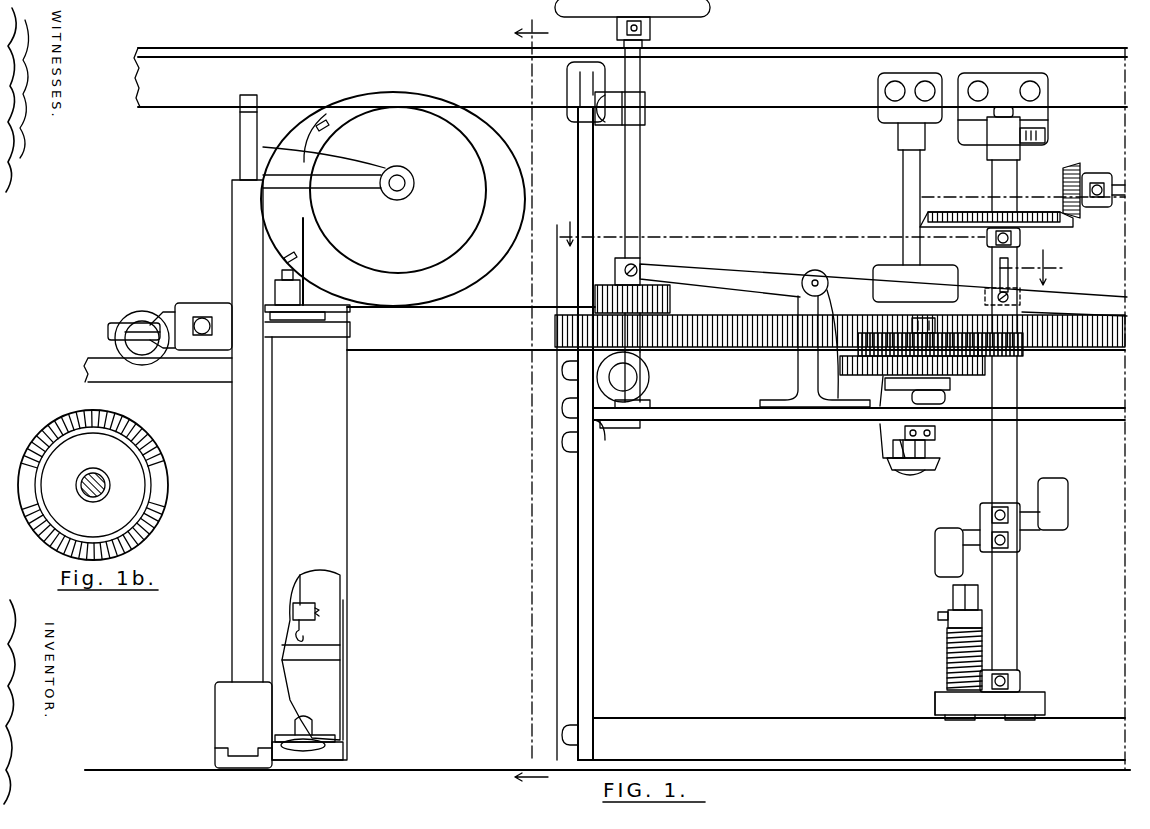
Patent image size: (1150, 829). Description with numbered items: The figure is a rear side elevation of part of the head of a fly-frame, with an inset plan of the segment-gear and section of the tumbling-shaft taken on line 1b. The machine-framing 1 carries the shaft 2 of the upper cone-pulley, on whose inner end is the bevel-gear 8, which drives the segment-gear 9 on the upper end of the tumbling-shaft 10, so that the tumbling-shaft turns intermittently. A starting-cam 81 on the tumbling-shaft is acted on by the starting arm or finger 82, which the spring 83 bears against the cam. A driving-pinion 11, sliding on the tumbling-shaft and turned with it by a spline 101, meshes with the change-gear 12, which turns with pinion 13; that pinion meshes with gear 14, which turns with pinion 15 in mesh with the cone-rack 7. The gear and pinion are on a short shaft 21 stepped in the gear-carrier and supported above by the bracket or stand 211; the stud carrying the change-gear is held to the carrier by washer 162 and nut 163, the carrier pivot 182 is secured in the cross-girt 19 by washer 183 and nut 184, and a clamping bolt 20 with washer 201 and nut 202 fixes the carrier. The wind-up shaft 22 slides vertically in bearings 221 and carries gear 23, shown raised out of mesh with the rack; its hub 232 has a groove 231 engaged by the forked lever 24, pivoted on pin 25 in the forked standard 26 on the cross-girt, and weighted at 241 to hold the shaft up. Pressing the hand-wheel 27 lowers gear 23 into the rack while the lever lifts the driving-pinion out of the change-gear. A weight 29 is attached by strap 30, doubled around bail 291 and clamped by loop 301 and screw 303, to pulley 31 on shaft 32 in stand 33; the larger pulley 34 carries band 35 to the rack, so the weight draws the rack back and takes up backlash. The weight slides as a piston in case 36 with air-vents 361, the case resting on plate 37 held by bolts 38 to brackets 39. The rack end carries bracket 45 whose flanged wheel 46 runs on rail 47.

In FIG. 1, the machine-framing 1 is at (311, 50).
In FIG. 1, the shaft of the upper cone-pulley 2 is at (1119, 179).
In FIG. 1, the cone-rack 7 is at (719, 351).
In FIG. 1, the bevel-gear 8 is at (1076, 165).
In FIG. 1, the segment-gear 9 is at (966, 205).
In FIG. 1b, the segment-gear 9 is at (93, 485).
In FIG. 1, the tumbling-shaft 10 is at (1003, 371).
In FIG. 1, the driving-pinion 11 is at (1045, 368).
In FIG. 1, the driven gear 12 is at (1009, 331).
In FIG. 1, the pinion 13 is at (944, 372).
In FIG. 1, the gear 14 is at (862, 380).
In FIG. 1, the pinion 15 is at (908, 320).
In FIG. 1, the cross-girt 19 is at (756, 427).
In FIG. 1, the bolt 20 is at (529, 404).
In FIG. 1, the short shaft 21 is at (904, 200).
In FIG. 1, the wind-up shaft 22 is at (647, 186).
In FIG. 1, the gear 23 is at (678, 299).
In FIG. 1, the lever 24 is at (883, 291).
In FIG. 1, the pin 25 is at (823, 272).
In FIG. 1, the forked standard 26 is at (791, 381).
In FIG. 1, the hand-wheel 27 is at (685, 14).
In FIG. 1, the weight 29 is at (311, 655).
In FIG. 1, the strap 30 is at (300, 272).
In FIG. 1, the pulley 31 is at (393, 199).
In FIG. 1, the shaft 32 is at (408, 191).
In FIG. 1, the stand 33 is at (331, 195).
In FIG. 1, the pulley 34 is at (406, 190).
In FIG. 1, the band 35 is at (356, 307).
In FIG. 1, the case 36 is at (282, 431).
In FIG. 1, the plate 37 is at (351, 755).
In FIG. 1, the bolts 38 is at (303, 751).
In FIG. 1, the brackets 39 is at (286, 733).
In FIG. 1, the frame or bracket 45 is at (211, 294).
In FIG. 1, the flanged wheel 46 is at (147, 305).
In FIG. 1, the rail 47 is at (179, 374).
In FIG. 1, the starting-cam 81 is at (1028, 704).
In FIG. 1, the starting arm or finger 82 is at (929, 705).
In FIG. 1, the spring 83 is at (949, 646).
In FIG. 1, the spline 101 is at (994, 281).
In FIG. 1, the washer 162 is at (950, 398).
In FIG. 1, the nut 163 is at (945, 404).
In FIG. 1, the journal or pivot 182 is at (915, 474).
In FIG. 1, the washer 183 is at (881, 449).
In FIG. 1, the nut 184 is at (888, 467).
In FIG. 1, the washer 201 is at (936, 434).
In FIG. 1, the nut 202 is at (926, 450).
In FIG. 1, the bracket or stand 211 is at (910, 111).
In FIG. 1, the bearings 221 is at (645, 102).
In FIG. 1, the groove 231 is at (624, 270).
In FIG. 1, the hub 232 is at (642, 260).
In FIG. 1, the weight 241 is at (915, 283).
In FIG. 1, the bail 291 is at (308, 638).
In FIG. 1, the rectangular open loop 301 is at (306, 611).
In FIG. 1, the screw 303 is at (331, 611).
In FIG. 1, the holes or air-vents 361 is at (350, 708).
In FIG. 1, the section line 1b is at (1023, 188).